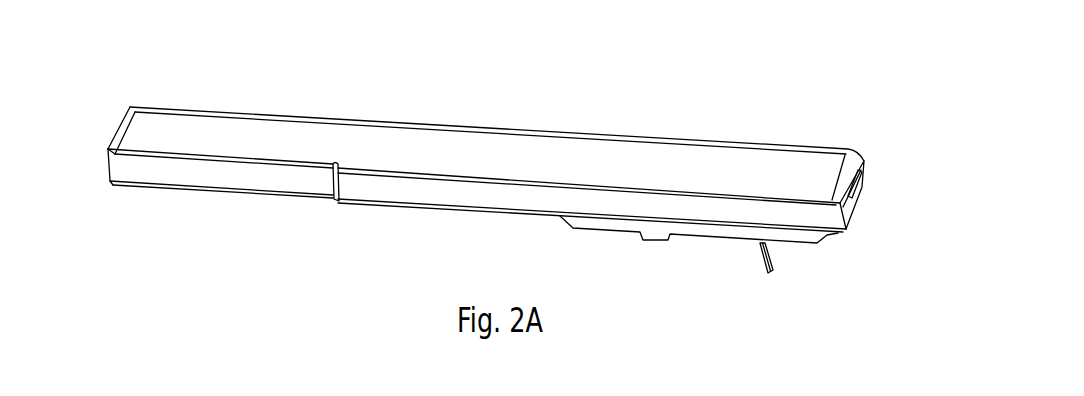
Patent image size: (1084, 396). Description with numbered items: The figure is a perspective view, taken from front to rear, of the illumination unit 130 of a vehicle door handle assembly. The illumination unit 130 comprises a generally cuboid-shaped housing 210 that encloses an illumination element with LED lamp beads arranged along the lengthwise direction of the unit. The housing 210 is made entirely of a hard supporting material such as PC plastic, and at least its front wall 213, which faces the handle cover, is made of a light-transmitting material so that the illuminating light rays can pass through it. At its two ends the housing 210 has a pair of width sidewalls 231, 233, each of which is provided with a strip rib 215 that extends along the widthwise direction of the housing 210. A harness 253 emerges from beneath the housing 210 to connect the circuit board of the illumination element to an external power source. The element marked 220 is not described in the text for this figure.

The illumination unit 130 is at (812, 78).
The housing 210 is at (856, 155).
The front wall 213 is at (582, 152).
The strip rib 215 is at (861, 177).
The cover 220 is at (688, 142).
The width sidewall 231 is at (855, 212).
The width sidewall 233 is at (107, 167).
The harness 253 is at (765, 258).